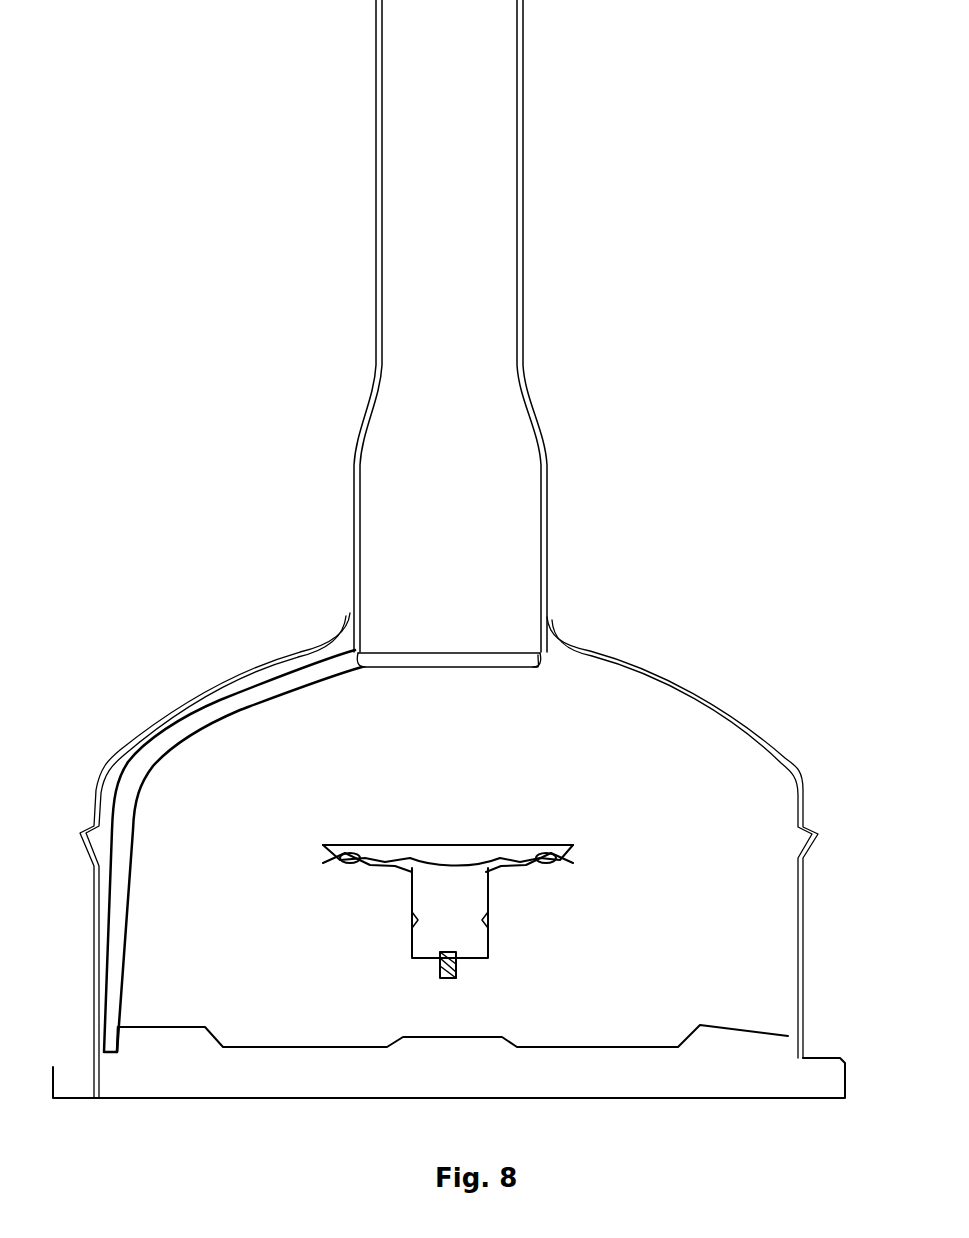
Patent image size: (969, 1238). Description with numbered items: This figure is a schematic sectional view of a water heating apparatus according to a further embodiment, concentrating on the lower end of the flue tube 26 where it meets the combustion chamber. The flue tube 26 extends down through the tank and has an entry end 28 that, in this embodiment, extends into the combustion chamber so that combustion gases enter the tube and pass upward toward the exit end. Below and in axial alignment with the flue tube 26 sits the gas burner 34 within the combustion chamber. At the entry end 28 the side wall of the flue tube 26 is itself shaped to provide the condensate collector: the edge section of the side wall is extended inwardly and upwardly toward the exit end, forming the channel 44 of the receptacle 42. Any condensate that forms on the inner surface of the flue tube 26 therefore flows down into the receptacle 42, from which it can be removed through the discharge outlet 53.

The flue tube 26 is at (526, 362).
The entry end 28 is at (542, 662).
The receptacle 42 is at (465, 665).
The channel 44 is at (531, 653).
The discharge outlet 53 is at (362, 660).
The gas burner 34 is at (522, 845).